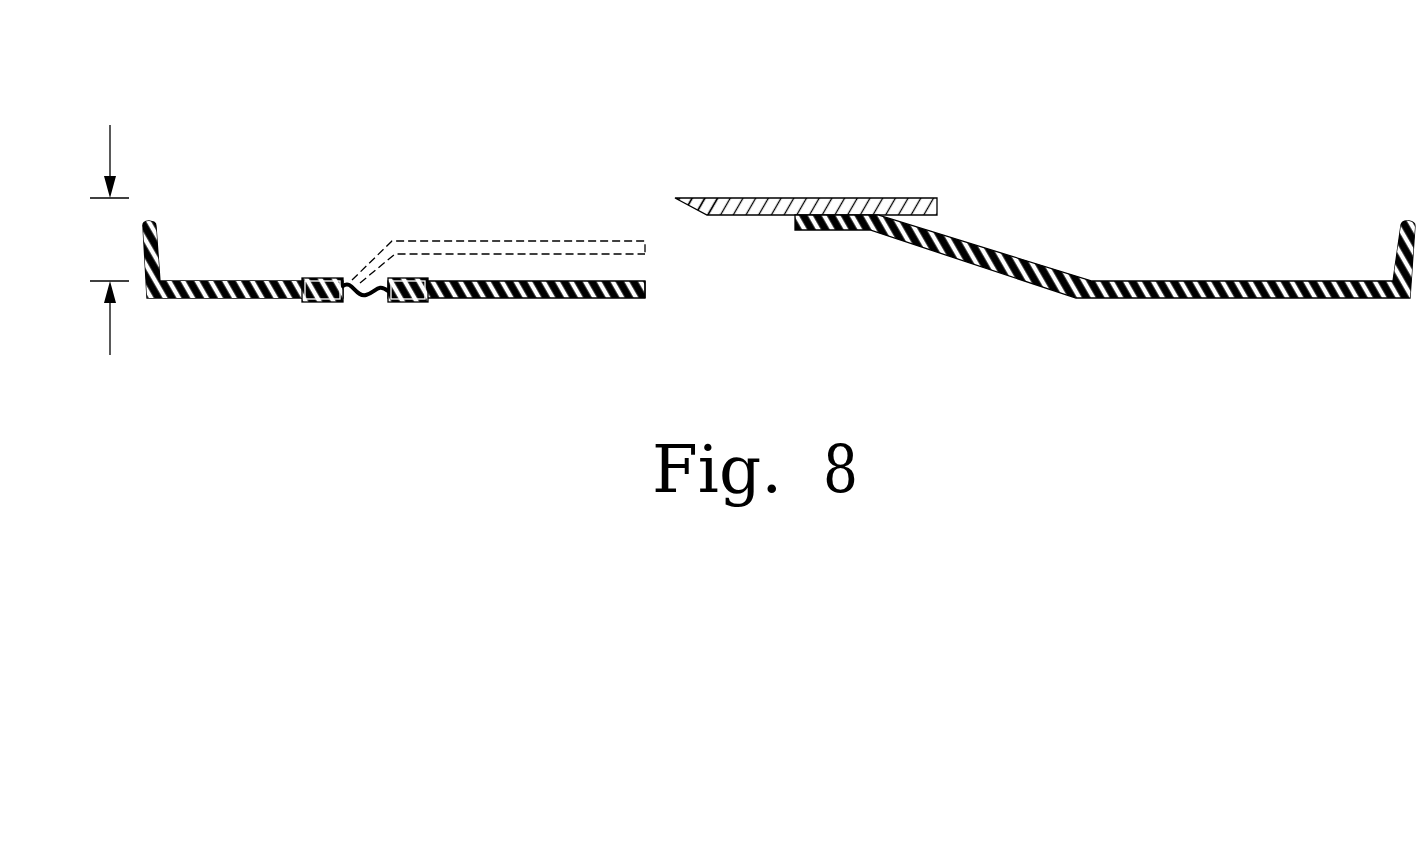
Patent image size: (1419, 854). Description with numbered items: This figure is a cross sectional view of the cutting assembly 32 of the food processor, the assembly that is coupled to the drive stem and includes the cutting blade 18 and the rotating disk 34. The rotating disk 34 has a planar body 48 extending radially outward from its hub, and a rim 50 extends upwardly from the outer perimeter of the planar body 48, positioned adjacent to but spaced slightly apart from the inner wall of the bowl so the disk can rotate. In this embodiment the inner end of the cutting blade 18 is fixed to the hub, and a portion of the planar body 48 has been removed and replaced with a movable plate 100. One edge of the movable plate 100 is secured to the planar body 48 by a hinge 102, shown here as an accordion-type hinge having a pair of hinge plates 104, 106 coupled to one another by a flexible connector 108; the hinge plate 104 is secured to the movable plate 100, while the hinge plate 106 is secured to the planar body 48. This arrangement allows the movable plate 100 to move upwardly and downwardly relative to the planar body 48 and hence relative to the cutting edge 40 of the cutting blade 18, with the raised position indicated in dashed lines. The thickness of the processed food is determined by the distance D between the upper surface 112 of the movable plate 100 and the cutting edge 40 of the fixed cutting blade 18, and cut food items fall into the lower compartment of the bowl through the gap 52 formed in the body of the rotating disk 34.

The distance D is at (111, 152).
The cutting blade 18 is at (762, 199).
The cutting assembly 32 is at (1011, 158).
The rotating disk 34 is at (1198, 281).
The cutting edge 40 is at (676, 198).
The planar body 48 is at (230, 299).
The rim 50 is at (1397, 253).
The gap 52 is at (680, 237).
The movable plate 100 is at (592, 300).
The hinge 102 is at (464, 270).
The hinge plate 104 is at (413, 302).
The hinge plate 106 is at (322, 278).
The flexible connector 108 is at (368, 300).
The upper surface 112 is at (631, 281).